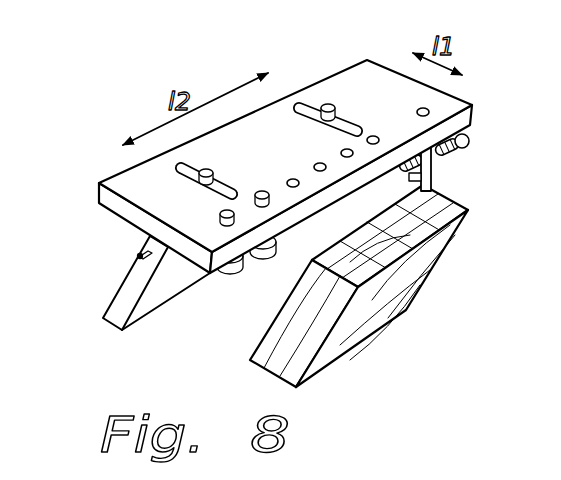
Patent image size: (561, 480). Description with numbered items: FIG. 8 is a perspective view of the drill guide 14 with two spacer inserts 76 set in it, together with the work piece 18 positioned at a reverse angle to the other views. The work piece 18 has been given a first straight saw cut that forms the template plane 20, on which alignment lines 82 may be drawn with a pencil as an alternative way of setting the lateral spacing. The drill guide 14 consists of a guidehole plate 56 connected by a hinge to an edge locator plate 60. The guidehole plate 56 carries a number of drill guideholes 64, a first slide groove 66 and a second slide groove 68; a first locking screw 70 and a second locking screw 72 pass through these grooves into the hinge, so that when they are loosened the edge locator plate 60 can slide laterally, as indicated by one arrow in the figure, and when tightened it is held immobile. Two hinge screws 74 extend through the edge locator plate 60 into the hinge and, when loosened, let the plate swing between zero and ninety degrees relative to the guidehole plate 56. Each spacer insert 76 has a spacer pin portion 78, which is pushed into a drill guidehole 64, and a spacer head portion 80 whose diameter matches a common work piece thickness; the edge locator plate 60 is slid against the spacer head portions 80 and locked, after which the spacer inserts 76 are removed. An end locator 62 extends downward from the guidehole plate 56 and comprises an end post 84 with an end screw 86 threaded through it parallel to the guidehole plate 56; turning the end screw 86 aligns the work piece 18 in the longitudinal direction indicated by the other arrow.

The drill guide 14 is at (302, 173).
The work piece 18 is at (372, 286).
The template plane 20 is at (387, 224).
The guidehole plate 56 is at (372, 90).
The edge locator plate 60 is at (494, 476).
The end locator 62 is at (480, 148).
The drill guideholes 64 is at (345, 148).
The first slide groove 66 is at (216, 178).
The second slide groove 68 is at (312, 81).
The first locking screw 70 is at (198, 182).
The second locking screw 72 is at (330, 106).
The hinge screws 74 is at (150, 252).
The spacer inserts 76 is at (238, 277).
The spacer pin portion 78 is at (265, 190).
The spacer head portion 80 is at (258, 258).
The alignment lines 82 is at (452, 207).
The end post 84 is at (417, 180).
The end screw 86 is at (462, 133).